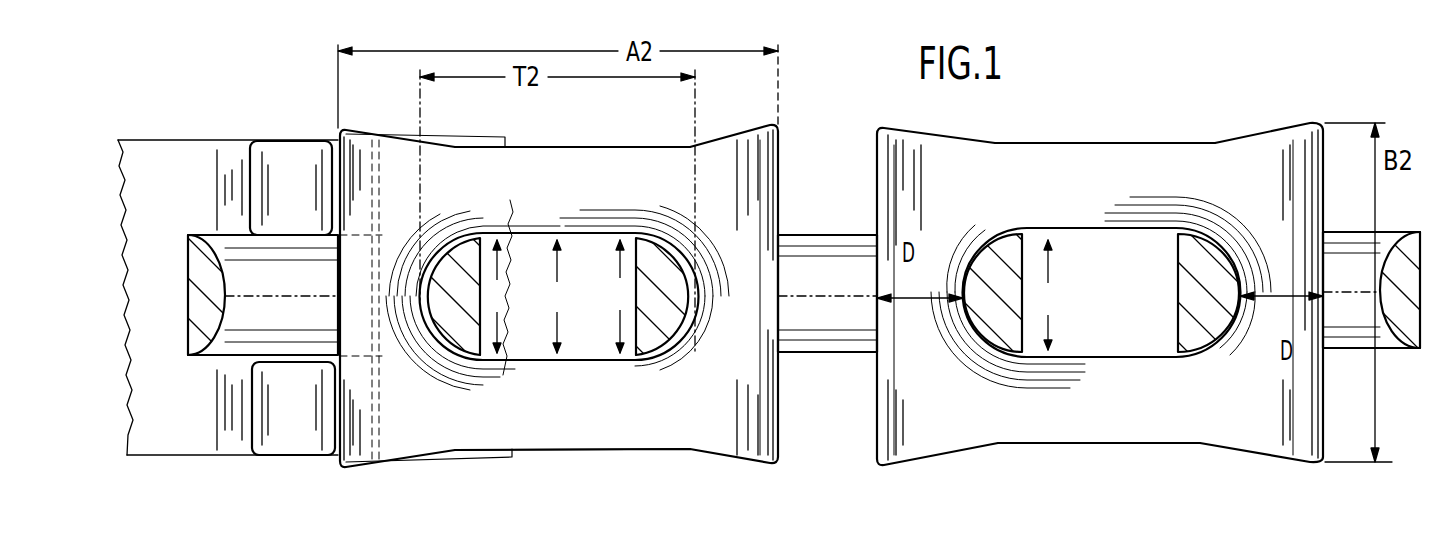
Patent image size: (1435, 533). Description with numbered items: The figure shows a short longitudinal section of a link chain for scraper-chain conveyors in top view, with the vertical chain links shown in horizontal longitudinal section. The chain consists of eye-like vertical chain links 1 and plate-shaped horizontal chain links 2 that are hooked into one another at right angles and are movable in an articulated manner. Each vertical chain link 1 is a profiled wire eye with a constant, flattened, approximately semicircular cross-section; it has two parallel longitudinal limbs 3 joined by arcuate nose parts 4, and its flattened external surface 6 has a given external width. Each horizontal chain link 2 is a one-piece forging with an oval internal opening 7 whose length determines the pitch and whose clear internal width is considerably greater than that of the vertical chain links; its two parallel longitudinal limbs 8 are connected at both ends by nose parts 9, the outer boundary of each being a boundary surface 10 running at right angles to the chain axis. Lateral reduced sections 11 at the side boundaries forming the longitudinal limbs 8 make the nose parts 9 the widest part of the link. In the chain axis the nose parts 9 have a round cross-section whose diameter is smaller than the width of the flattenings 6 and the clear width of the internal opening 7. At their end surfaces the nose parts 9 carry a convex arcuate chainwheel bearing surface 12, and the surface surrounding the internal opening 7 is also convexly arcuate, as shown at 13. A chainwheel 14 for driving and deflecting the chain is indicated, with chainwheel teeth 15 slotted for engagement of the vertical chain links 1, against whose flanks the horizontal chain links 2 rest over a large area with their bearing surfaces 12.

The vertical chain link 1 is at (212, 352).
The horizontal chain link 2 is at (433, 432).
The longitudinal limb 3 is at (260, 270).
The nose part 4 is at (656, 235).
The flattened external surface 6 is at (475, 236).
The oval internal opening 7 is at (591, 235).
The longitudinal limb 8 is at (570, 177).
The nose part 9 is at (716, 148).
The boundary surface 10 is at (876, 155).
The lateral reduced section 11 is at (538, 146).
The chainwheel bearing surface 12 is at (876, 200).
The convex arcuate surface 13 is at (1150, 190).
The chainwheel 14 is at (203, 423).
The chainwheel tooth 15 is at (290, 160).